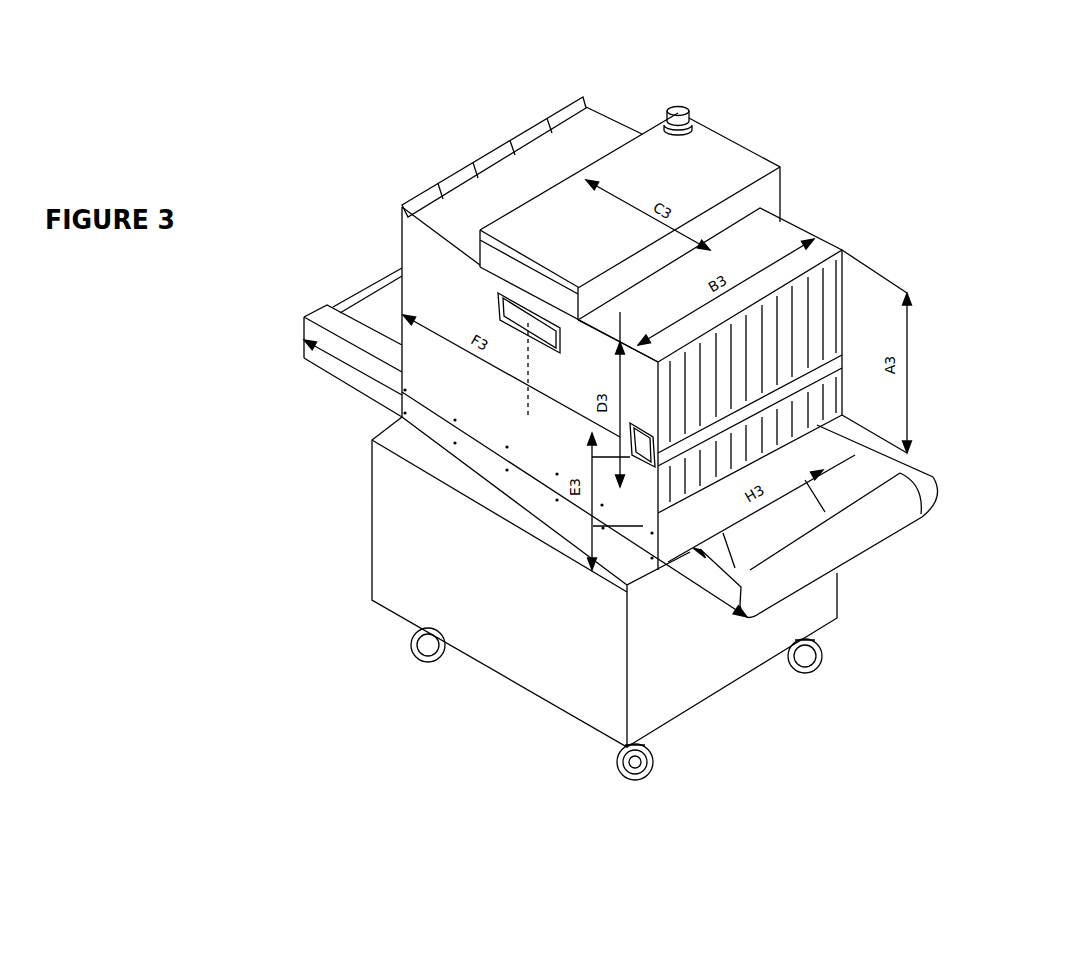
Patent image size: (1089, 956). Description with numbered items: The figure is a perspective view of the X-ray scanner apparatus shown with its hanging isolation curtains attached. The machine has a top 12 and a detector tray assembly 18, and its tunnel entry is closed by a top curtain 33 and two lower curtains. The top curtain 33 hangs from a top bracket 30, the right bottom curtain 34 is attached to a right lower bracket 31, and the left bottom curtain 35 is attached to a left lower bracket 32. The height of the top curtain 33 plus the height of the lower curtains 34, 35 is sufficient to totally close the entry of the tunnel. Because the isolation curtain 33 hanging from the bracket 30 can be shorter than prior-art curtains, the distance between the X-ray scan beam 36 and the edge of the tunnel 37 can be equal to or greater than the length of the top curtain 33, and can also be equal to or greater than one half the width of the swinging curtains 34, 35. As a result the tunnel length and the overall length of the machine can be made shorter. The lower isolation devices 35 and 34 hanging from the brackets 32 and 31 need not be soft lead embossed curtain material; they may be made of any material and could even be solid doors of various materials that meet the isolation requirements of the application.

The top 12 is at (587, 132).
The detector tray assembly 18 is at (710, 155).
The top bracket 30 is at (848, 247).
The edge of the tunnel 37 is at (857, 285).
The top curtain 33 is at (815, 323).
The right lower bracket 31 is at (830, 370).
The right bottom curtain 34 is at (805, 408).
The left lower bracket 32 is at (682, 447).
The left bottom curtain 35 is at (716, 460).
The X-ray scan beam 36 is at (520, 427).